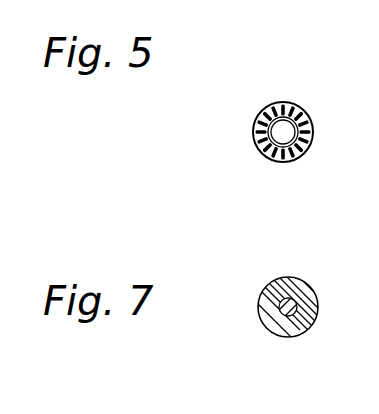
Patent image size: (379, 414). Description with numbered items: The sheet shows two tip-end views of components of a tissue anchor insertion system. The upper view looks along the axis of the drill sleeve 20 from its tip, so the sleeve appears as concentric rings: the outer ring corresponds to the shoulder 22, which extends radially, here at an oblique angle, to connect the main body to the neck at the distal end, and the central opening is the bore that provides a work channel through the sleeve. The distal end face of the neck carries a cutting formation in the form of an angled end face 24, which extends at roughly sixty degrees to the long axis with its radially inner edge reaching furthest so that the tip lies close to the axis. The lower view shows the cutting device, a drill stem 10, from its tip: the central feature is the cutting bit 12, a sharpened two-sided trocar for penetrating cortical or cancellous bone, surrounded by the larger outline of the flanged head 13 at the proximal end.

In FIG. 5, the drill sleeve 20 is at (251, 118).
In FIG. 5, the shoulder 22 is at (299, 116).
In FIG. 5, the angled end face 24 is at (271, 143).
In FIG. 7, the drill stem 10 is at (250, 296).
In FIG. 7, the cutting bit 12 is at (284, 312).
In FIG. 7, the flanged head 13 is at (302, 290).